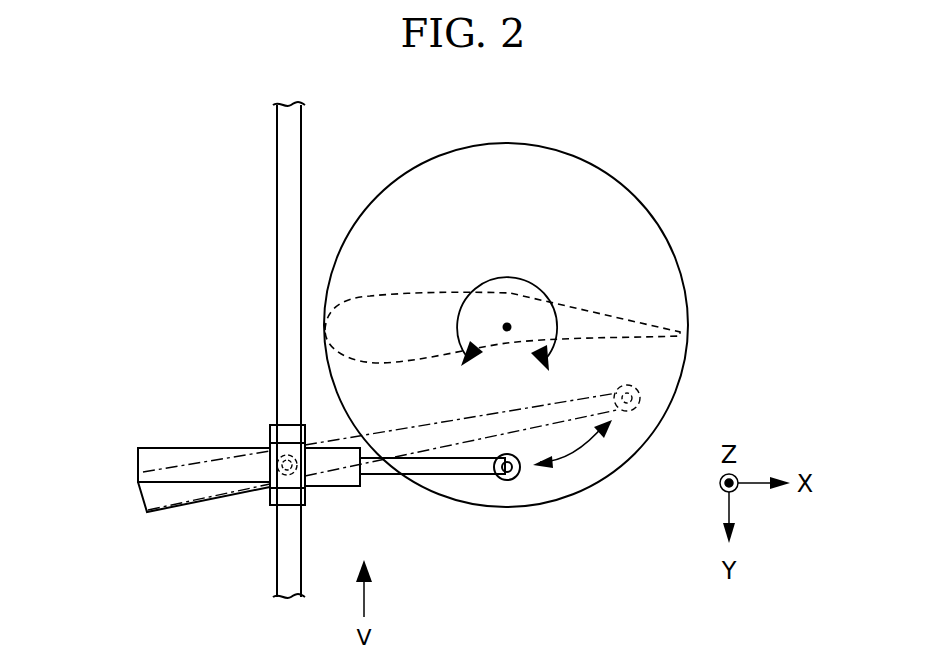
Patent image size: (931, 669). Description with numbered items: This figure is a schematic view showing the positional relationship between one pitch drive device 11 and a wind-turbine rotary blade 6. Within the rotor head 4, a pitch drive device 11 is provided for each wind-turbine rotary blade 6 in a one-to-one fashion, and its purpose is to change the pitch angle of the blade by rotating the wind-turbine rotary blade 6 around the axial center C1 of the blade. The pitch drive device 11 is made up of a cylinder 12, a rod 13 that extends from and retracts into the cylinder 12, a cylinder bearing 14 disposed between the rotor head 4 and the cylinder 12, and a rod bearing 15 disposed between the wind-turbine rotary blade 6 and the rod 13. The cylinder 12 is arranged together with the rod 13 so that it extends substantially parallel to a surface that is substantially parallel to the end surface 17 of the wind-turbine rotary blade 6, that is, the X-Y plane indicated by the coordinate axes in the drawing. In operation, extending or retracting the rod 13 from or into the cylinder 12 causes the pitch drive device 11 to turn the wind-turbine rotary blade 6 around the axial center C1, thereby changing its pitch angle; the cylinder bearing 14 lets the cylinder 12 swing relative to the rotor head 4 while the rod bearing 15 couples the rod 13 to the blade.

The rotor head 4 is at (277, 173).
The wind-turbine rotary blade 6 is at (600, 305).
The pitch drive device 11 is at (421, 532).
The cylinder 12 is at (192, 448).
The rod 13 is at (463, 476).
The cylinder bearing 14 is at (258, 509).
The rod bearing 15 is at (520, 478).
The end surface 17 is at (680, 292).
The axial center C1 is at (507, 334).